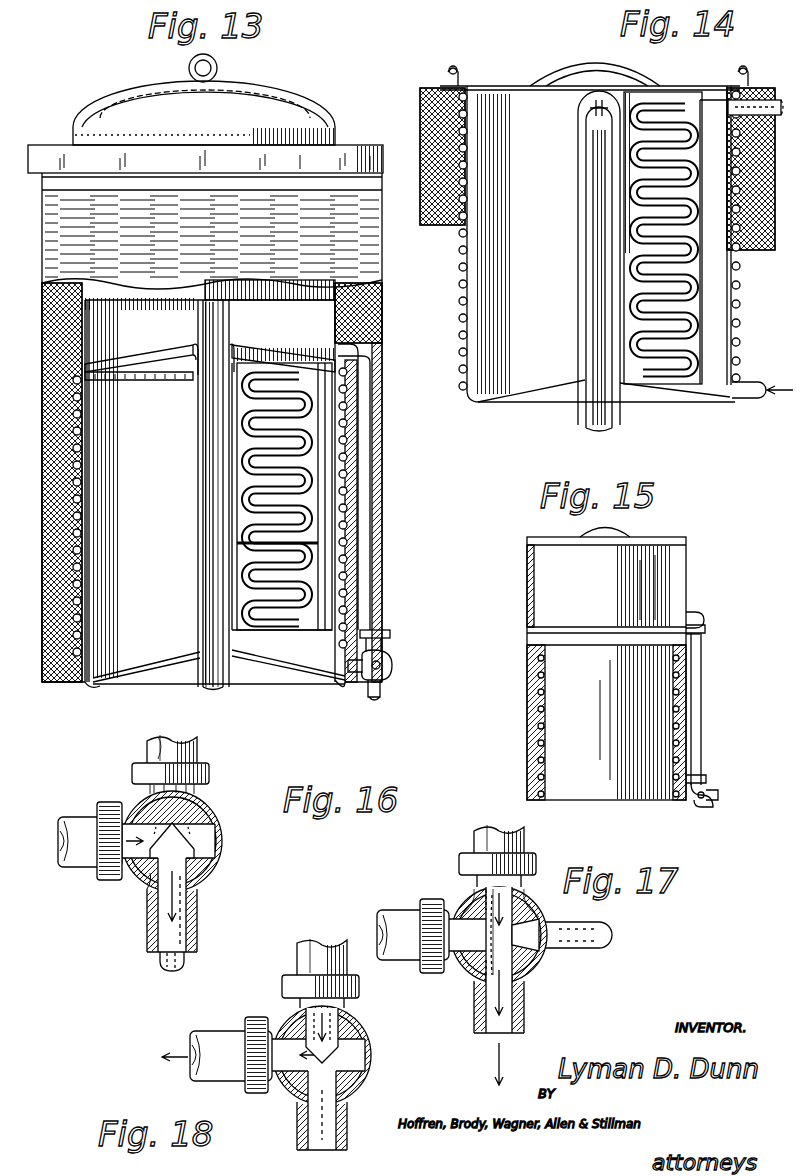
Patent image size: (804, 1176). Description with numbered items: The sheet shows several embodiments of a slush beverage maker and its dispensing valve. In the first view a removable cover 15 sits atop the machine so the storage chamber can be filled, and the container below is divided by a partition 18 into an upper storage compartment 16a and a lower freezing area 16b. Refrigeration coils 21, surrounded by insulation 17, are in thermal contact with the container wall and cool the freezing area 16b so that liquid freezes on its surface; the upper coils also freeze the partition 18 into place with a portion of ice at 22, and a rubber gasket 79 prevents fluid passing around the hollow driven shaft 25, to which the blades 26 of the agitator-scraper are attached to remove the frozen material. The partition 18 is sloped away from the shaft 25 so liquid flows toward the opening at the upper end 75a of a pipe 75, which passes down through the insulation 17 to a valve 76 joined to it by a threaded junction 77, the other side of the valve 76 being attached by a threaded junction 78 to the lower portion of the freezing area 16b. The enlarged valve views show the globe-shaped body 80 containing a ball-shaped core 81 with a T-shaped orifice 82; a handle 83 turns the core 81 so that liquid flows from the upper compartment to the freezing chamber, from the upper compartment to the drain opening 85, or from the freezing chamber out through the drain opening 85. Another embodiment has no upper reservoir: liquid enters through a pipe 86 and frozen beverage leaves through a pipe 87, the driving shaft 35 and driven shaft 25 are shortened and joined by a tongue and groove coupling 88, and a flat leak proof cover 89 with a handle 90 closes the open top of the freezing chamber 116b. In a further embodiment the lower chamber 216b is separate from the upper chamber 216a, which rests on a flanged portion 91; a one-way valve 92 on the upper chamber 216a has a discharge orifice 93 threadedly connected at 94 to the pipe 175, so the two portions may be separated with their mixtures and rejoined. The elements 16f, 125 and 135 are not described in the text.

In FIG. 13, the cover 15 is at (290, 104).
In FIG. 13, the insulation 17 is at (380, 296).
In FIG. 13, the storage compartment 16a is at (334, 322).
In FIG. 13, the upper end of pipe 75a is at (372, 346).
In FIG. 13, the portion of ice 22 is at (87, 362).
In FIG. 13, the partition 18 is at (150, 348).
In FIG. 13, the rubber gasket 79 is at (196, 382).
In FIG. 13, the driven shaft 25 is at (195, 418).
In FIG. 13, the refrigeration coils 21 is at (90, 484).
In FIG. 13, the pipe 75 is at (372, 478).
In FIG. 16, the pipe 75 is at (199, 742).
In FIG. 17, the pipe 75 is at (491, 819).
In FIG. 18, the pipe 75 is at (318, 936).
In FIG. 13, the freezing area 16b is at (90, 556).
In FIG. 13, the blades 26 is at (247, 558).
In FIG. 13, the vessel bottom 16f is at (150, 657).
In FIG. 13, the driving shaft 35 is at (218, 632).
In FIG. 13, the threaded junction 77 is at (388, 633).
In FIG. 13, the valve 76 is at (395, 667).
In FIG. 17, the valve 76 is at (527, 918).
In FIG. 18, the valve 76 is at (346, 1055).
In FIG. 13, the threaded junction 78 is at (352, 670).
In FIG. 14, the cover 89 is at (500, 84).
In FIG. 14, the handle 90 is at (578, 58).
In FIG. 14, the pipe 87 is at (758, 100).
In FIG. 14, the tongue and groove coupling 88 is at (578, 104).
In FIG. 14, the inner tube 125 is at (578, 146).
In FIG. 14, the freezing chamber 116b is at (475, 208).
In FIG. 14, the stem 135 is at (595, 240).
In FIG. 14, the pipe 86 is at (752, 395).
In FIG. 15, the flanged portion 91 is at (530, 630).
In FIG. 15, the upper chamber 216a is at (672, 575).
In FIG. 15, the lower chamber 216b is at (637, 790).
In FIG. 15, the one-way valve 92 is at (702, 614).
In FIG. 15, the discharge orifice 93 is at (703, 624).
In FIG. 15, the threaded connection 94 is at (700, 634).
In FIG. 15, the pipe 175 is at (702, 712).
In FIG. 16, the globe-shaped body 80 is at (190, 827).
In FIG. 18, the globe-shaped body 80 is at (345, 996).
In FIG. 16, the T-shaped orifice 82 is at (168, 842).
In FIG. 17, the T-shaped orifice 82 is at (433, 958).
In FIG. 18, the T-shaped orifice 82 is at (297, 1058).
In FIG. 16, the valve core 81 is at (204, 869).
In FIG. 17, the valve core 81 is at (540, 943).
In FIG. 18, the valve core 81 is at (357, 1068).
In FIG. 16, the drain opening 85 is at (194, 907).
In FIG. 17, the drain opening 85 is at (526, 1027).
In FIG. 18, the drain opening 85 is at (302, 1117).
In FIG. 16, the handle 83 is at (184, 973).
In FIG. 17, the handle 83 is at (598, 957).